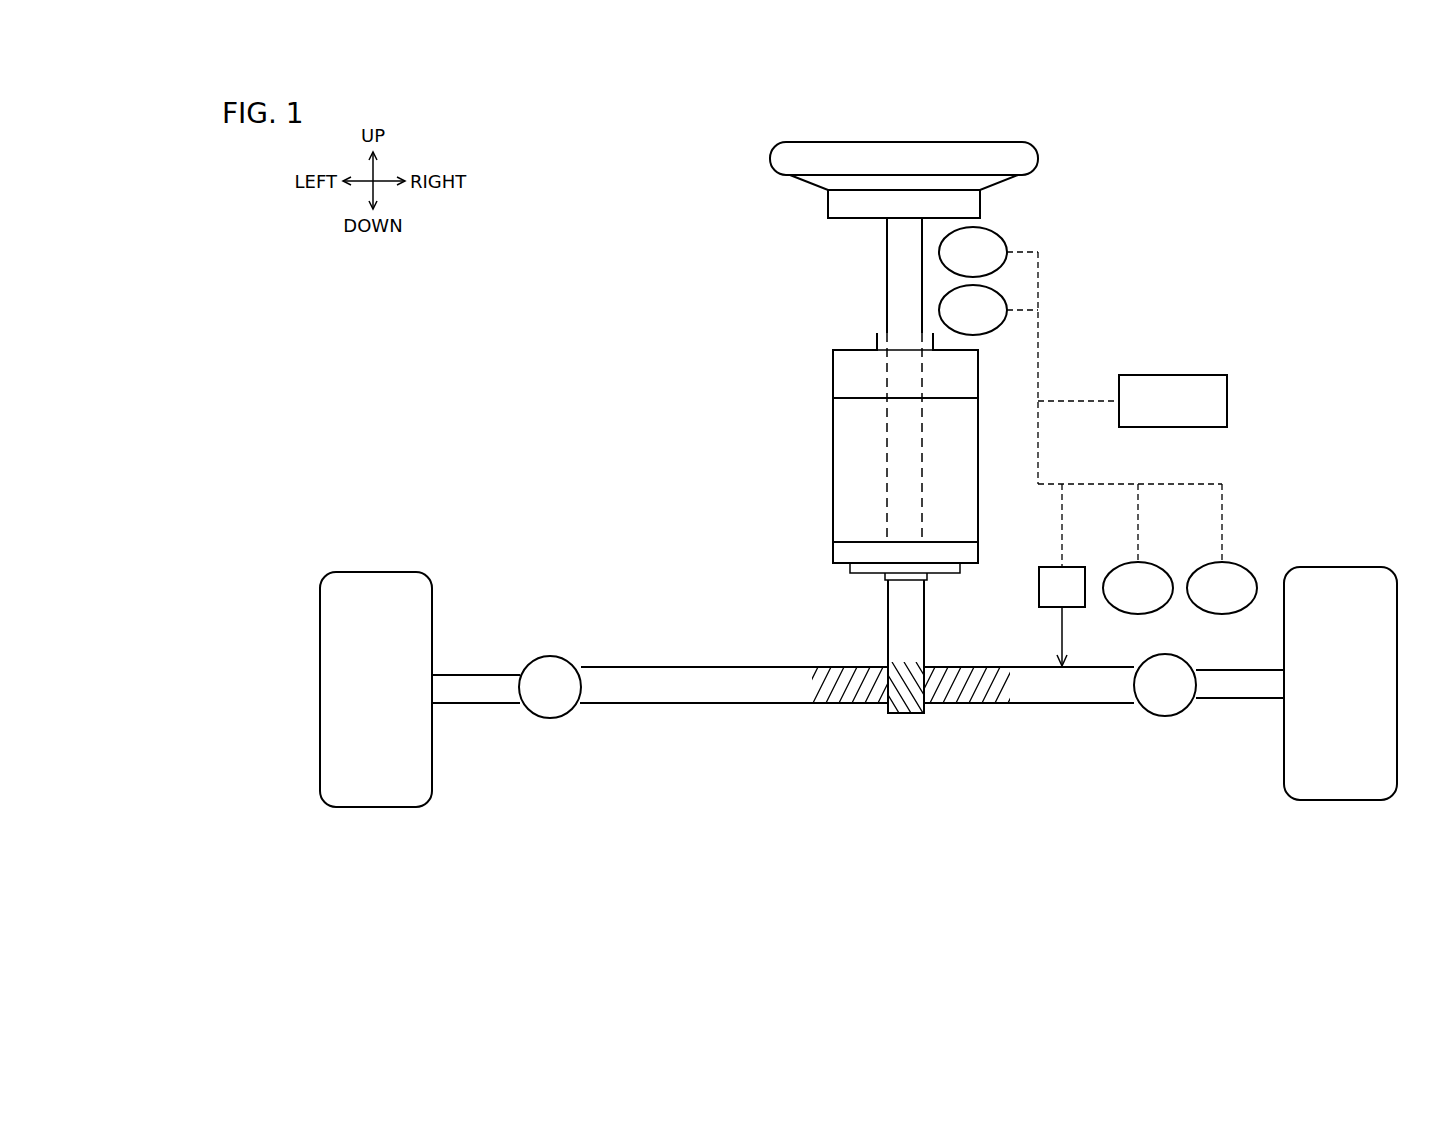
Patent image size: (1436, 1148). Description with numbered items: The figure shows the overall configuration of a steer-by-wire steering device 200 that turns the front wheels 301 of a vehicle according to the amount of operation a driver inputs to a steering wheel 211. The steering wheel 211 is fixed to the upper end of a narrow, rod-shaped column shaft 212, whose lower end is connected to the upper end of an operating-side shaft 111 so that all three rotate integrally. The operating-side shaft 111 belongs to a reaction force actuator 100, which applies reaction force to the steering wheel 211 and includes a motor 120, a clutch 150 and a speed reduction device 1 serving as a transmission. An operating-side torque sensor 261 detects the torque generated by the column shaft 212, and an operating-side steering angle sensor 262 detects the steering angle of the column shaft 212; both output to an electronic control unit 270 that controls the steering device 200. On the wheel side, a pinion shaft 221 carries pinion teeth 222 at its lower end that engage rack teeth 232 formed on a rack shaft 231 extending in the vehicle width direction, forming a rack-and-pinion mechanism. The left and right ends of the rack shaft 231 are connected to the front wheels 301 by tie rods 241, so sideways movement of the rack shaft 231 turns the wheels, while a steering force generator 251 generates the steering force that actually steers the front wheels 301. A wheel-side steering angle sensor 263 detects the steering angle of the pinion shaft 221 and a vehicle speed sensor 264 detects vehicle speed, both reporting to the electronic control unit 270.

The speed reduction device 1 is at (833, 376).
The reaction force actuator 100 is at (768, 400).
The operating-side shaft 111 is at (885, 455).
The motor 120 is at (833, 491).
The clutch 150 is at (833, 554).
The steering device 200 is at (585, 243).
The steering wheel 211 is at (770, 152).
The column shaft 212 is at (887, 272).
The pinion shaft 221 is at (888, 625).
The pinion teeth 222 is at (903, 700).
The rack shaft 231 is at (857, 704).
The rack teeth 232 is at (975, 690).
The tie rods 241 is at (478, 703).
The steering force generator 251 is at (1079, 567).
The operating-side torque sensor 261 is at (1003, 240).
The operating-side steering angle sensor 262 is at (990, 330).
The wheel-side steering angle sensor 263 is at (1160, 563).
The vehicle speed sensor 264 is at (1244, 563).
The electronic control unit 270 is at (1174, 375).
The front wheels 301 is at (375, 572).